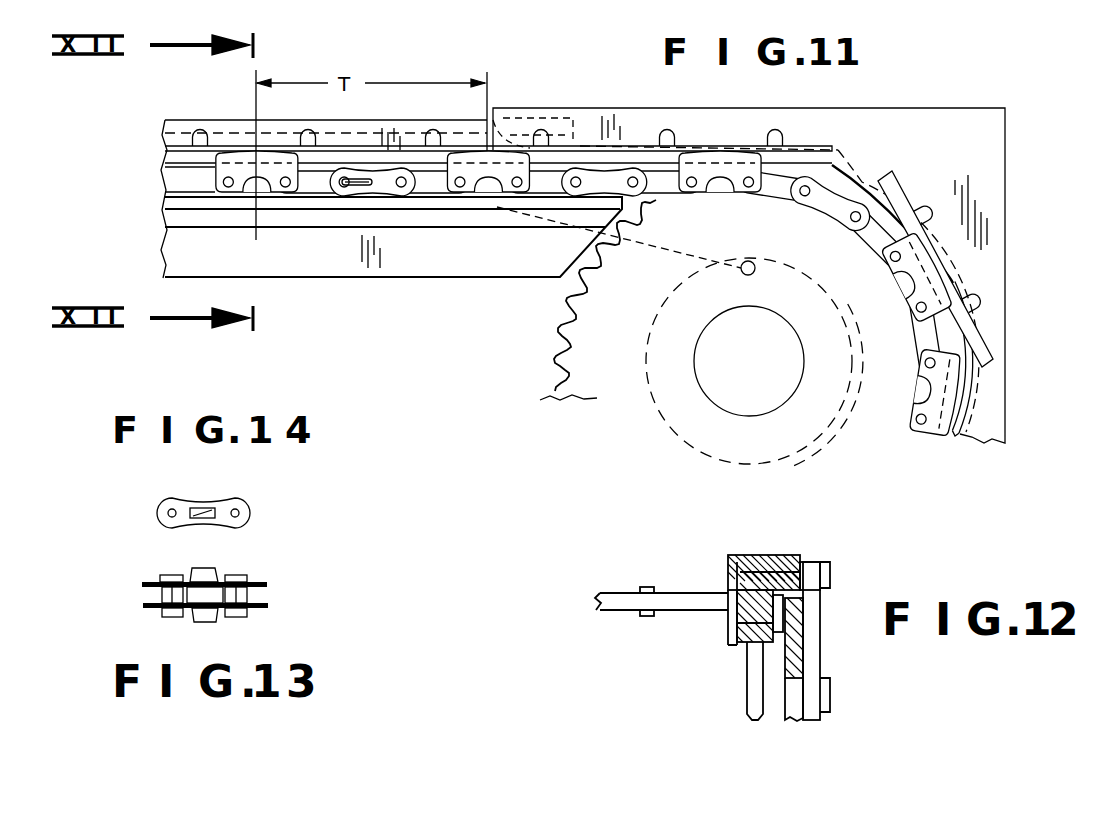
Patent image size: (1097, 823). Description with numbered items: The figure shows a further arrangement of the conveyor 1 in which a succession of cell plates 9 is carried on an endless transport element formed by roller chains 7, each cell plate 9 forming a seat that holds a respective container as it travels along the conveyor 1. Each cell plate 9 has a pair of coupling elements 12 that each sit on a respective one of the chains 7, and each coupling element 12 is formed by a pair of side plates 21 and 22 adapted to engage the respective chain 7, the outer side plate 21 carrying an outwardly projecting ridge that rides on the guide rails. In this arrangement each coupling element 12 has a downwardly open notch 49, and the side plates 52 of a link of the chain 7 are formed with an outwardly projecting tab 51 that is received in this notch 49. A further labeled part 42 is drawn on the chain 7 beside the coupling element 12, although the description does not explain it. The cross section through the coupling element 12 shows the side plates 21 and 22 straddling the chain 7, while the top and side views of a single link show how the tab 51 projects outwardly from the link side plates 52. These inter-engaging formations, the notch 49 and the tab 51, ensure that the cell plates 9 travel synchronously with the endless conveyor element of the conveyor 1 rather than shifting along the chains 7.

In FIG. 11, the conveyor 1 is at (598, 131).
In FIG. 11, the cell plate 9 is at (170, 153).
In FIG. 12, the cell plate 9 is at (681, 600).
In FIG. 11, the shoe 42 is at (222, 172).
In FIG. 11, the downwardly open notch 49 is at (256, 240).
In FIG. 13, the roller chain 7 is at (147, 603).
In FIG. 13, the outwardly projecting tab 51 is at (202, 572).
In FIG. 14, the outwardly projecting tab 51 is at (210, 507).
In FIG. 13, the side plate 52 is at (183, 611).
In FIG. 12, the coupling element 12 is at (713, 605).
In FIG. 12, the outer side plate 21 is at (733, 622).
In FIG. 12, the side plate 22 is at (792, 608).